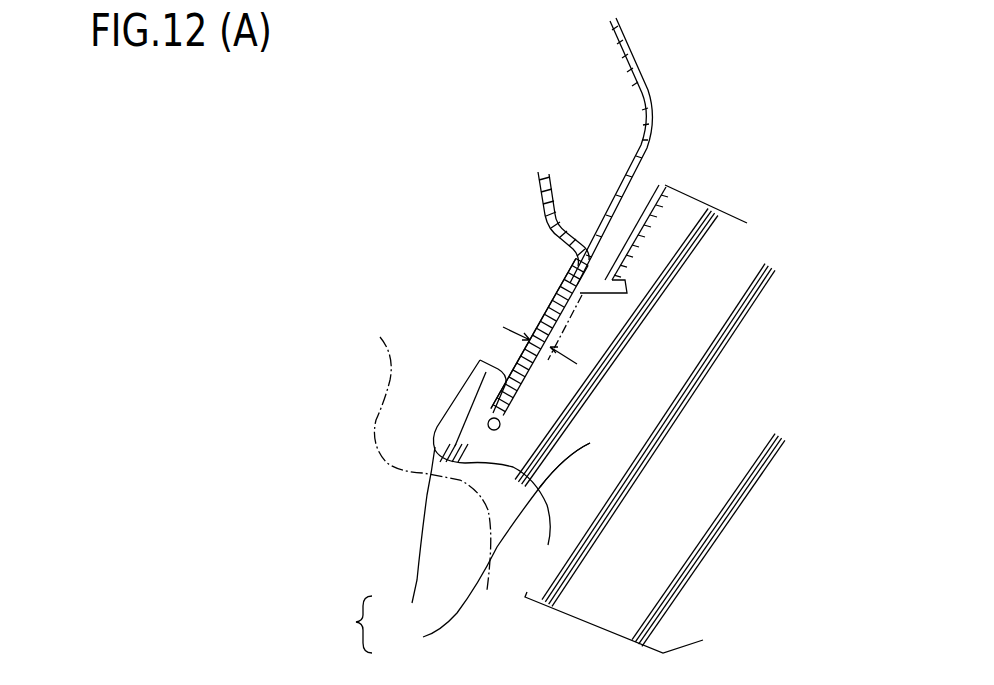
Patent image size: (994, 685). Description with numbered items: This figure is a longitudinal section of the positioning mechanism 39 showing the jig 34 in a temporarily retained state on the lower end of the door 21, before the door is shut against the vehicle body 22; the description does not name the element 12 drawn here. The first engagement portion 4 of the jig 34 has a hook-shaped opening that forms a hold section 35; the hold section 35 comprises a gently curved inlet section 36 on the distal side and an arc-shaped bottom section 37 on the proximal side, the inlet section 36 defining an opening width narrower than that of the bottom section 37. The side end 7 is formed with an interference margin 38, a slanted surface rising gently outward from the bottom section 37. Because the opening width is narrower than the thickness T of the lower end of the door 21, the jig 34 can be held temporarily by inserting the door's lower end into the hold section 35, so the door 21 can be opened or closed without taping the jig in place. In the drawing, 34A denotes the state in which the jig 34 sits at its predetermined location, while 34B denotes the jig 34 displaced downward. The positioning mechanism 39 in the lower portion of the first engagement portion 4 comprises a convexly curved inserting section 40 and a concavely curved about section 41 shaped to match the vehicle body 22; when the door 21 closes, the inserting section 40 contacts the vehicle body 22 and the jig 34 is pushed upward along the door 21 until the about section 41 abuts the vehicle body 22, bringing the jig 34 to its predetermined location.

The first engagement portion 4 is at (463, 428).
The side end 7 is at (557, 303).
The door panel flange 12 is at (637, 236).
The door 21 is at (650, 97).
The vehicle body 22 is at (586, 446).
The jig 34 is at (692, 378).
The state in which the jig is in a predetermined location 34A is at (586, 402).
The state in which the jig is arranged at a location displaced downwardly 34B is at (573, 617).
The hold section 35 is at (485, 393).
The inlet section 36 is at (483, 362).
The bottom section 37 is at (497, 432).
The interference margin 38 is at (533, 334).
The positioning mechanism 39 is at (347, 624).
The inserting section 40 is at (412, 603).
The about section 41 is at (423, 637).
The thickness of the lower end of the door T is at (549, 345).